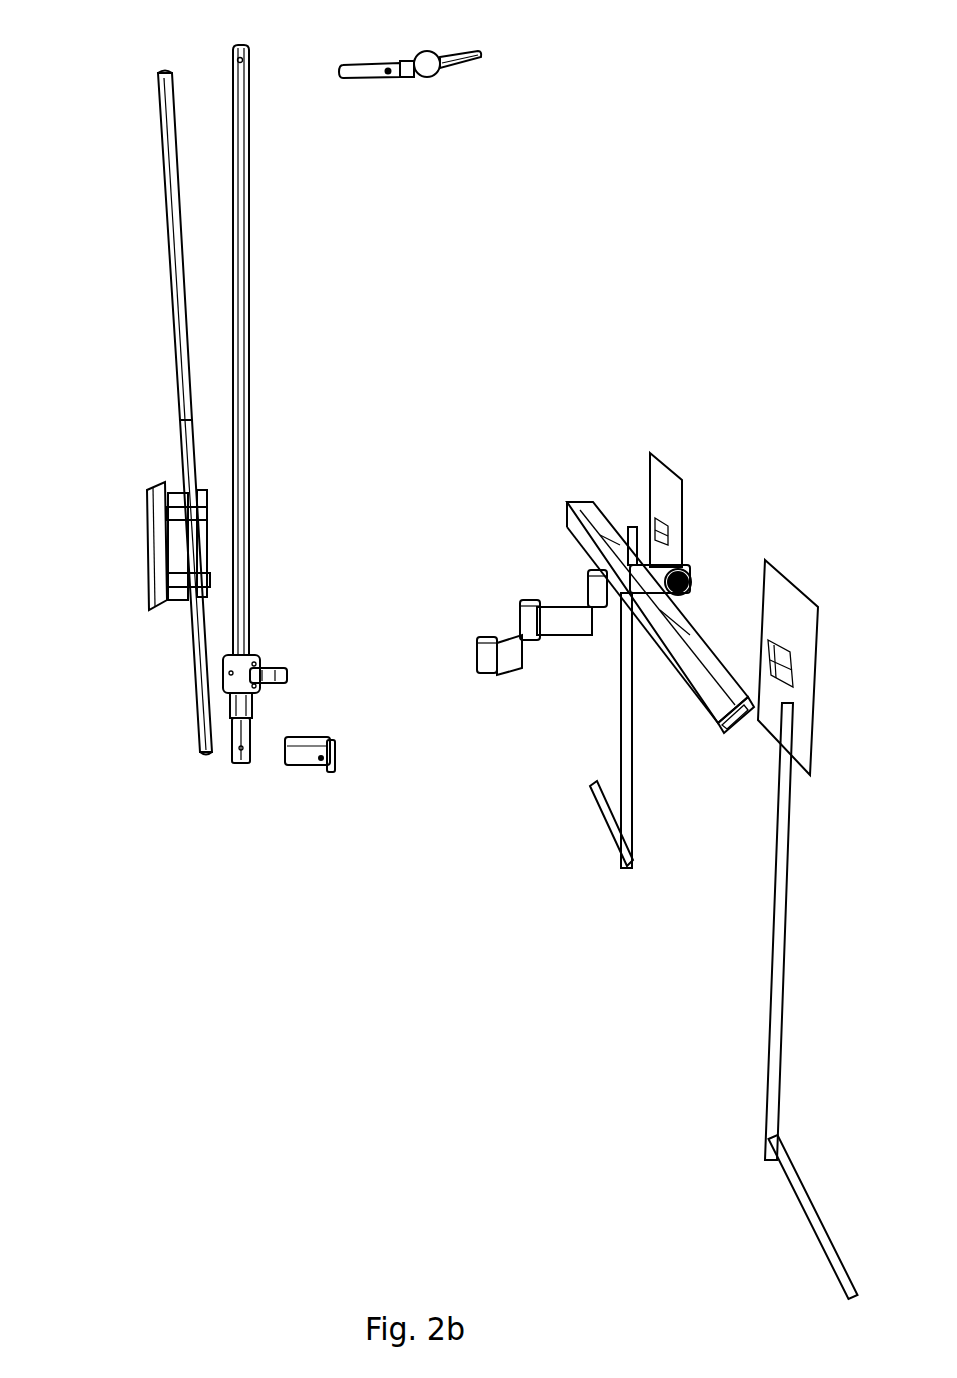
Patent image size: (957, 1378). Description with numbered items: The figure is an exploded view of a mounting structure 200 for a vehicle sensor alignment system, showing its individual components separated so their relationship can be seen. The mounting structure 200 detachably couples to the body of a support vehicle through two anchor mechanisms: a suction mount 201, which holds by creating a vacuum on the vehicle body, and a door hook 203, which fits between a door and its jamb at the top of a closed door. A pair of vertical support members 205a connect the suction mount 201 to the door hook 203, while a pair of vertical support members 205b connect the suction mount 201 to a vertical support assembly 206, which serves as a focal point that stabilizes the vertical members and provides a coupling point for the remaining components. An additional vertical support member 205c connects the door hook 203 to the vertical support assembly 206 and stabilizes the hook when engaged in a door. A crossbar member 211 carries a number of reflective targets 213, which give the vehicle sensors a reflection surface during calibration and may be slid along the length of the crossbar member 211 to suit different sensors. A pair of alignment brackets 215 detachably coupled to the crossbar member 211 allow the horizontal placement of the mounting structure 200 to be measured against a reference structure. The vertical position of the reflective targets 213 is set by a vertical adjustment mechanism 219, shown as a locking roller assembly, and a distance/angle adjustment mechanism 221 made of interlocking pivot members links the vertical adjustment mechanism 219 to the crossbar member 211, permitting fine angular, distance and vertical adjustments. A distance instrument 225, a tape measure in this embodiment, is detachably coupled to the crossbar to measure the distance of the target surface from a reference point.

The mounting structure 200 is at (93, 50).
The suction mount 201 is at (146, 490).
The door hook 203 is at (365, 64).
The vertical support members 205a is at (162, 160).
The vertical support members 205b is at (190, 652).
The vertical support member 205c is at (247, 162).
The vertical support assembly 206 is at (334, 748).
The crossbar member 211 is at (567, 505).
The reflective targets 213 is at (650, 460).
The alignment brackets 215 is at (594, 800).
The vertical adjustment mechanism 219 is at (264, 672).
The distance/angle adjustment mechanism 221 is at (533, 662).
The distance instrument 225 is at (692, 582).